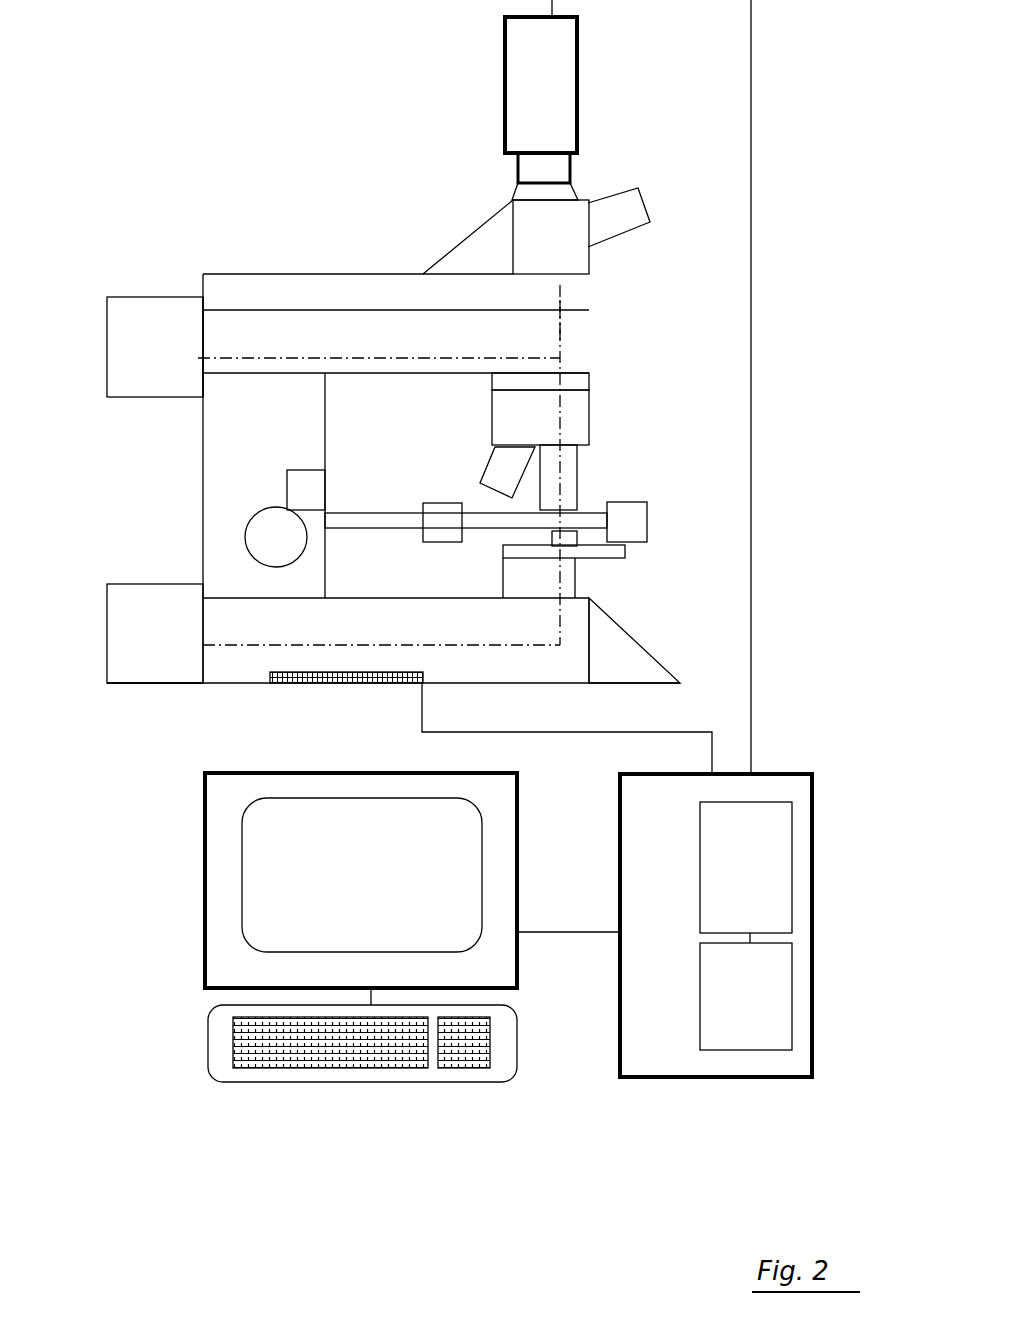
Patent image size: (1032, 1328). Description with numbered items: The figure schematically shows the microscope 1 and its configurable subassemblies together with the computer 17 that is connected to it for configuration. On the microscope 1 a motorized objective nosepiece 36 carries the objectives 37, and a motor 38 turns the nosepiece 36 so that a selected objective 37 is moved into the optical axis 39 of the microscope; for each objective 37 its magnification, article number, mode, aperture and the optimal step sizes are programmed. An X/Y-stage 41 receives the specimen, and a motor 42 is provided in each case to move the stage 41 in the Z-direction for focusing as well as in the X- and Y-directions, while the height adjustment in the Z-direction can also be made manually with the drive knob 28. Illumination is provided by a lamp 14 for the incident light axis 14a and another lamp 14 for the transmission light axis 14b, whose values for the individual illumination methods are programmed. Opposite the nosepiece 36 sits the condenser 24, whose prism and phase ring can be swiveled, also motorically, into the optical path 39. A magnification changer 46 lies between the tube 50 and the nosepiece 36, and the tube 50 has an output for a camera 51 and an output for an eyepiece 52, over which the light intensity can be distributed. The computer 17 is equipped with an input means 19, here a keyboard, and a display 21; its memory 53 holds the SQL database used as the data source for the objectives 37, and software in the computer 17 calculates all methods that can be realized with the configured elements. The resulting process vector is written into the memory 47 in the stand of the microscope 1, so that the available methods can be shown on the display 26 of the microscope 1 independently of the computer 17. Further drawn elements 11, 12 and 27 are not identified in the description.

The microscope 1 is at (292, 240).
The control unit 11 is at (778, 997).
The frame 12 is at (320, 272).
The lamp 14 is at (135, 317).
The incident light axis 14a is at (171, 312).
The transmission light axis 14b is at (177, 706).
The computer 17 is at (648, 893).
The input means 19 is at (217, 1063).
The display 21 is at (205, 868).
The condenser 24 is at (634, 640).
The display 26 is at (752, 685).
The signal line 27 is at (540, 732).
The drive knob 28 is at (257, 542).
The objective nosepiece 36 is at (578, 417).
The objective 37 is at (497, 468).
The motor 38 is at (577, 380).
The optical axis 39 is at (559, 330).
The X/Y-stage 41 is at (357, 513).
The motor 42 is at (293, 483).
The magnification changer 46 is at (594, 564).
The memory 47 is at (346, 701).
The tube 50 is at (490, 242).
The camera 51 is at (580, 108).
The eyepiece 52 is at (633, 233).
The memory 53 is at (777, 867).